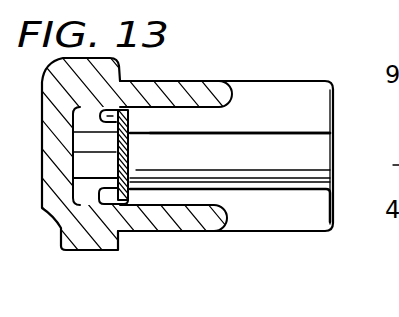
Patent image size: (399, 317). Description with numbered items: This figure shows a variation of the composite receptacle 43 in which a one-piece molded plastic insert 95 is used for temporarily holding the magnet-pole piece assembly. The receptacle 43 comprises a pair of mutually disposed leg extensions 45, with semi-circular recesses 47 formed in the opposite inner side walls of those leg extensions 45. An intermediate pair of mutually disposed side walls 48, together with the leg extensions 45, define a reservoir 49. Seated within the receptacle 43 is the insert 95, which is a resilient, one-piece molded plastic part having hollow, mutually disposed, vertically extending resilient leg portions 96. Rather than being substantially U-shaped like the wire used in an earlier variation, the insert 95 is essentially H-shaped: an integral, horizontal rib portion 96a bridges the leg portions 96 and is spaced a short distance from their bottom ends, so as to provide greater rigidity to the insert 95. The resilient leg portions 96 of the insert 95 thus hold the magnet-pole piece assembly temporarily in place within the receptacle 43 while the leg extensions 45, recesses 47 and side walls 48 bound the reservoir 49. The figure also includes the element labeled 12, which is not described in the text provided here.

The flange / mounting member 12 is at (82, 252).
The receptacle 43 is at (336, 207).
The leg extensions 45 is at (277, 218).
The semi-circular recesses 47 is at (298, 134).
The side walls 48 is at (212, 102).
The reservoir 49 is at (220, 112).
The one-piece molded plastic insert 95 is at (142, 117).
The resilient leg portions 96 is at (270, 148).
The horizontal rib portion 96a is at (132, 155).